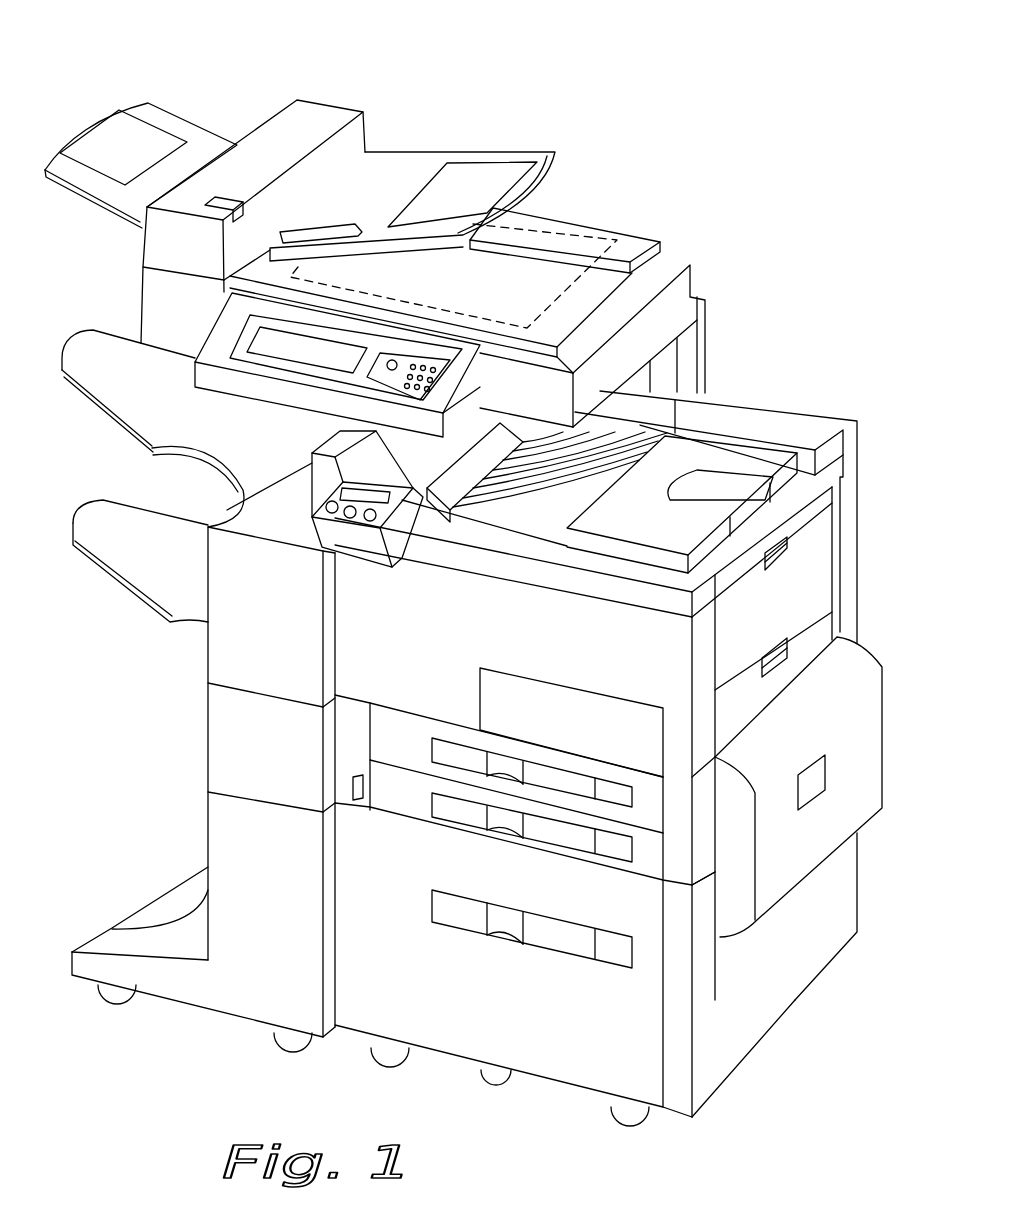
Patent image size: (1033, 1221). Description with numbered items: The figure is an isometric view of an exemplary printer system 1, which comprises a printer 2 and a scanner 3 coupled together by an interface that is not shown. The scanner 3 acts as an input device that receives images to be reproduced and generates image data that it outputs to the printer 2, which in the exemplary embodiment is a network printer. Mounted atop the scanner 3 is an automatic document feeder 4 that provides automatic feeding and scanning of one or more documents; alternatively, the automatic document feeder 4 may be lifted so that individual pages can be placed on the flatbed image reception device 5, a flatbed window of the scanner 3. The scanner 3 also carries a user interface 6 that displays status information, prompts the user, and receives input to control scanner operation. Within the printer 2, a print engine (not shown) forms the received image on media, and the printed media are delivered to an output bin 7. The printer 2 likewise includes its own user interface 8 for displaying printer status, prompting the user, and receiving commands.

The printer system 1 is at (723, 50).
The printer 2 is at (873, 423).
The scanner 3 is at (707, 280).
The automatic document feeder 4 is at (407, 127).
The flatbed image reception device 5 is at (562, 235).
The user interface 6 is at (278, 375).
The output bin 7 is at (648, 417).
The user interface 8 is at (355, 533).